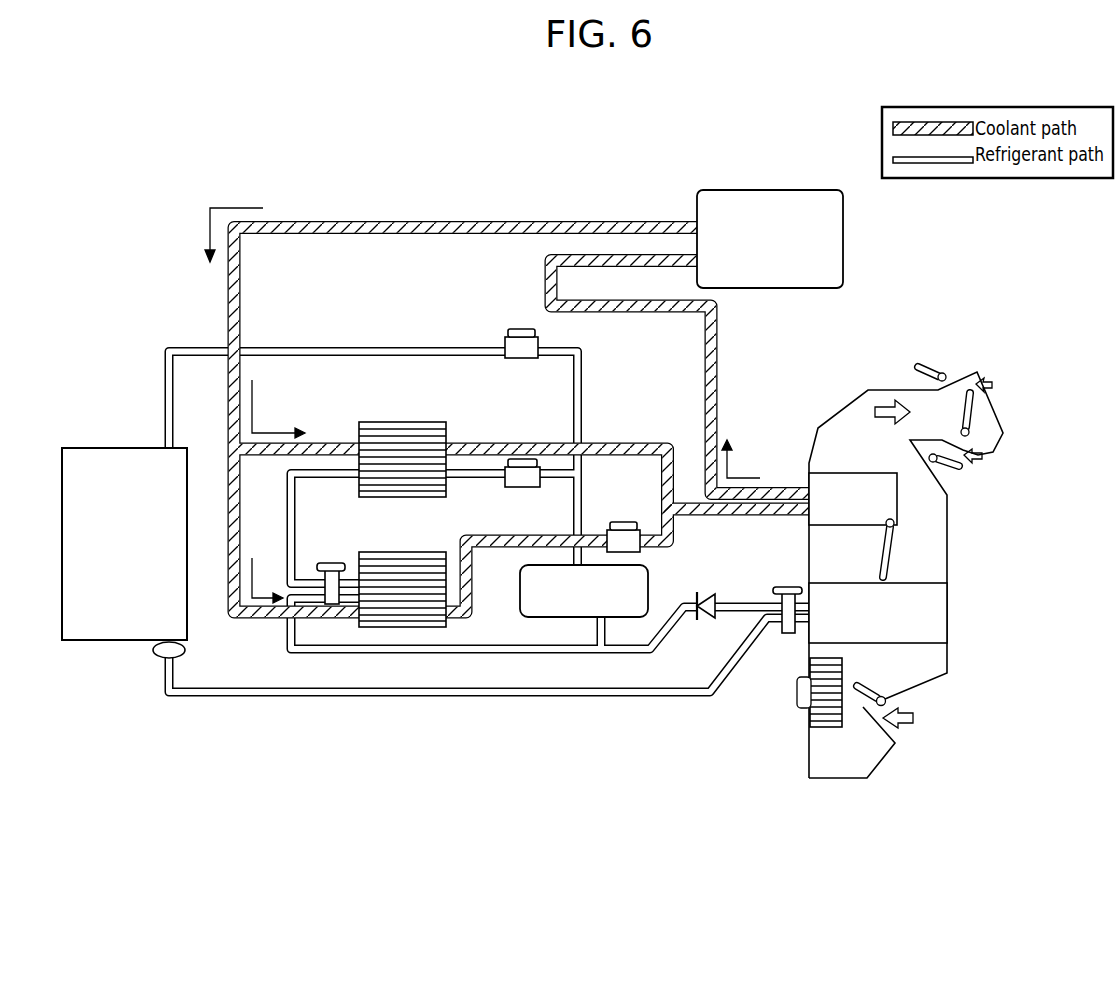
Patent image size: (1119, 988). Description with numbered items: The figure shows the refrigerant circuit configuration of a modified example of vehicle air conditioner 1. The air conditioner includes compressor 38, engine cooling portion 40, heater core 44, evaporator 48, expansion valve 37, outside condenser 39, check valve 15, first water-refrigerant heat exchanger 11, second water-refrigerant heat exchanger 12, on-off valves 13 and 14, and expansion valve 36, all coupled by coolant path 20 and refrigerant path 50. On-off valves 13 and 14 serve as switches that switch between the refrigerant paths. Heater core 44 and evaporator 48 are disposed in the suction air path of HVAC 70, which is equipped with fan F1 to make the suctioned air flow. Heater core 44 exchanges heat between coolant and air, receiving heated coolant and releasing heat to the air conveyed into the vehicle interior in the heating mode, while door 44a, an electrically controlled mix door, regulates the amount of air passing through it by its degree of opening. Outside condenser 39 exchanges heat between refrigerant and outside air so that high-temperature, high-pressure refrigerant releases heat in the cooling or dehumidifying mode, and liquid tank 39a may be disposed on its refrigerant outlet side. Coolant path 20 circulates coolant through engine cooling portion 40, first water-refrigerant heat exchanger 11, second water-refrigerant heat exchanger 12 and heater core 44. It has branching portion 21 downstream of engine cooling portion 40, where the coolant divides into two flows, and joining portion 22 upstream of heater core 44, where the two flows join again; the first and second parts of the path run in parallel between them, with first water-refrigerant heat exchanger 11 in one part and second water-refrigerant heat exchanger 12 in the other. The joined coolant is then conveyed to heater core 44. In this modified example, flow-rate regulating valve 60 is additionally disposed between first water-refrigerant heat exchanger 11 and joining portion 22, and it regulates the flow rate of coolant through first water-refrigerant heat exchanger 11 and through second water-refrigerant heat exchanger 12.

The vehicle air conditioner 1 is at (532, 169).
The first water-refrigerant heat exchanger 11 is at (402, 551).
The second water-refrigerant heat exchanger 12 is at (402, 421).
The on-off valve 13 is at (521, 359).
The on-off valve 14 is at (522, 489).
The check valve 15 is at (713, 591).
The coolant path 20 is at (413, 221).
The branching portion 21 is at (232, 451).
The joining portion 22 is at (678, 512).
The expansion valve 36 is at (330, 562).
The expansion valve 37 is at (788, 586).
The compressor 38 is at (649, 583).
The outside condenser 39 is at (120, 447).
The liquid tank 39a is at (152, 650).
The engine cooling portion 40 is at (770, 190).
The heater core 44 is at (855, 472).
The door 44a is at (893, 548).
The evaporator 48 is at (948, 617).
The refrigerant path 50 is at (475, 648).
The flow-rate regulating valve 60 is at (625, 521).
The HVAC 70 is at (947, 502).
The fan F1 is at (830, 728).